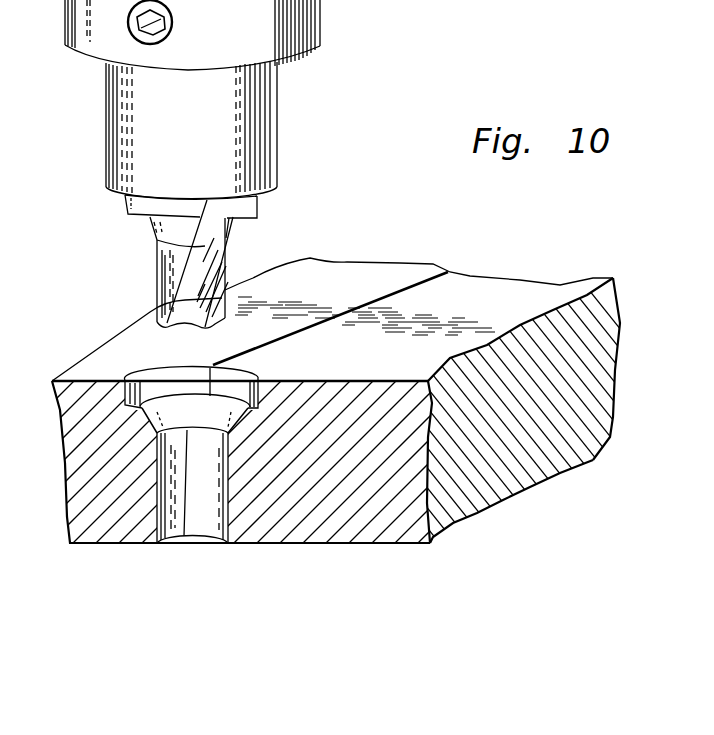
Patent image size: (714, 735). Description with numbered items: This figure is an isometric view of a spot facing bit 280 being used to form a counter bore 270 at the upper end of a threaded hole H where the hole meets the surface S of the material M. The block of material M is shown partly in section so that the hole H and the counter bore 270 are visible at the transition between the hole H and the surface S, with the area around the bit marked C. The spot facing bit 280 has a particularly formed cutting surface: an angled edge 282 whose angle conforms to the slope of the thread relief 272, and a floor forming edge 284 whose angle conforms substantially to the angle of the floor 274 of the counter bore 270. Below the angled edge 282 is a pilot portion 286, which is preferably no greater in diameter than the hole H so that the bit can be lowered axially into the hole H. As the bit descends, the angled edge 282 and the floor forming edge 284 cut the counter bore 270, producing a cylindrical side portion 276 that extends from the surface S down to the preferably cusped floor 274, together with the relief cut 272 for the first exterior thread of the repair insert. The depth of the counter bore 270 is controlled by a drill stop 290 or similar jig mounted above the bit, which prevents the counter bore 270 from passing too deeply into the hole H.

The counter bore 270 is at (175, 438).
The thread relief 272 is at (157, 384).
The floor 274 is at (140, 364).
The cylindrical side portion 276 is at (245, 378).
The spot facing bit 280 is at (216, 195).
The angled edge 282 is at (148, 228).
The floor forming edge 284 is at (130, 215).
The pilot portion 286 is at (213, 272).
The drill stop 290 is at (253, 27).
The material M is at (330, 478).
The surface S is at (406, 368).
The coolant layer C is at (447, 272).
The threaded hole H is at (203, 530).